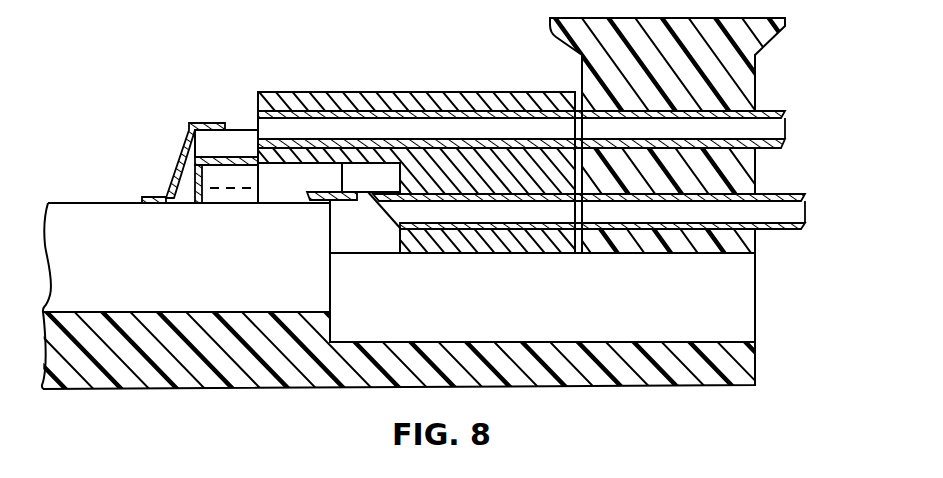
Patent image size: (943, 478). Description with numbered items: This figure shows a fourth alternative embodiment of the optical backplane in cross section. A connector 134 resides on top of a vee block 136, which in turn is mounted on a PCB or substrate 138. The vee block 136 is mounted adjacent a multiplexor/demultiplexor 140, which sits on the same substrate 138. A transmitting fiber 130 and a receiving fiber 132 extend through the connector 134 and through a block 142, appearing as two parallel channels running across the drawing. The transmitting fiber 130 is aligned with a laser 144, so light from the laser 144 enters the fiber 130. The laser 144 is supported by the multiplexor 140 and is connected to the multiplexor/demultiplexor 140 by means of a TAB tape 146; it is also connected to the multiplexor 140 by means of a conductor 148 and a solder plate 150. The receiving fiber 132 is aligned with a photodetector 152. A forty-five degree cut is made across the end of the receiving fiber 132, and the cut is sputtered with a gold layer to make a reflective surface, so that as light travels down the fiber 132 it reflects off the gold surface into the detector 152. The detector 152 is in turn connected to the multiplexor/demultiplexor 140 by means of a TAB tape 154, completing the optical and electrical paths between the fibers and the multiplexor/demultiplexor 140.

The transmitting fiber 130 is at (788, 127).
The receiving fiber 132 is at (808, 212).
The connector 134 is at (757, 97).
The vee block 136 is at (554, 318).
The PCB or substrate 138 is at (722, 367).
The multiplexor/demultiplexor 140 is at (219, 292).
The block 142 is at (428, 100).
The laser 144 is at (236, 140).
The TAB tape 146 is at (177, 160).
The conductor 148 is at (193, 187).
The solder plate 150 is at (202, 197).
The photodetector 152 is at (368, 175).
The TAB tape 154 is at (318, 200).